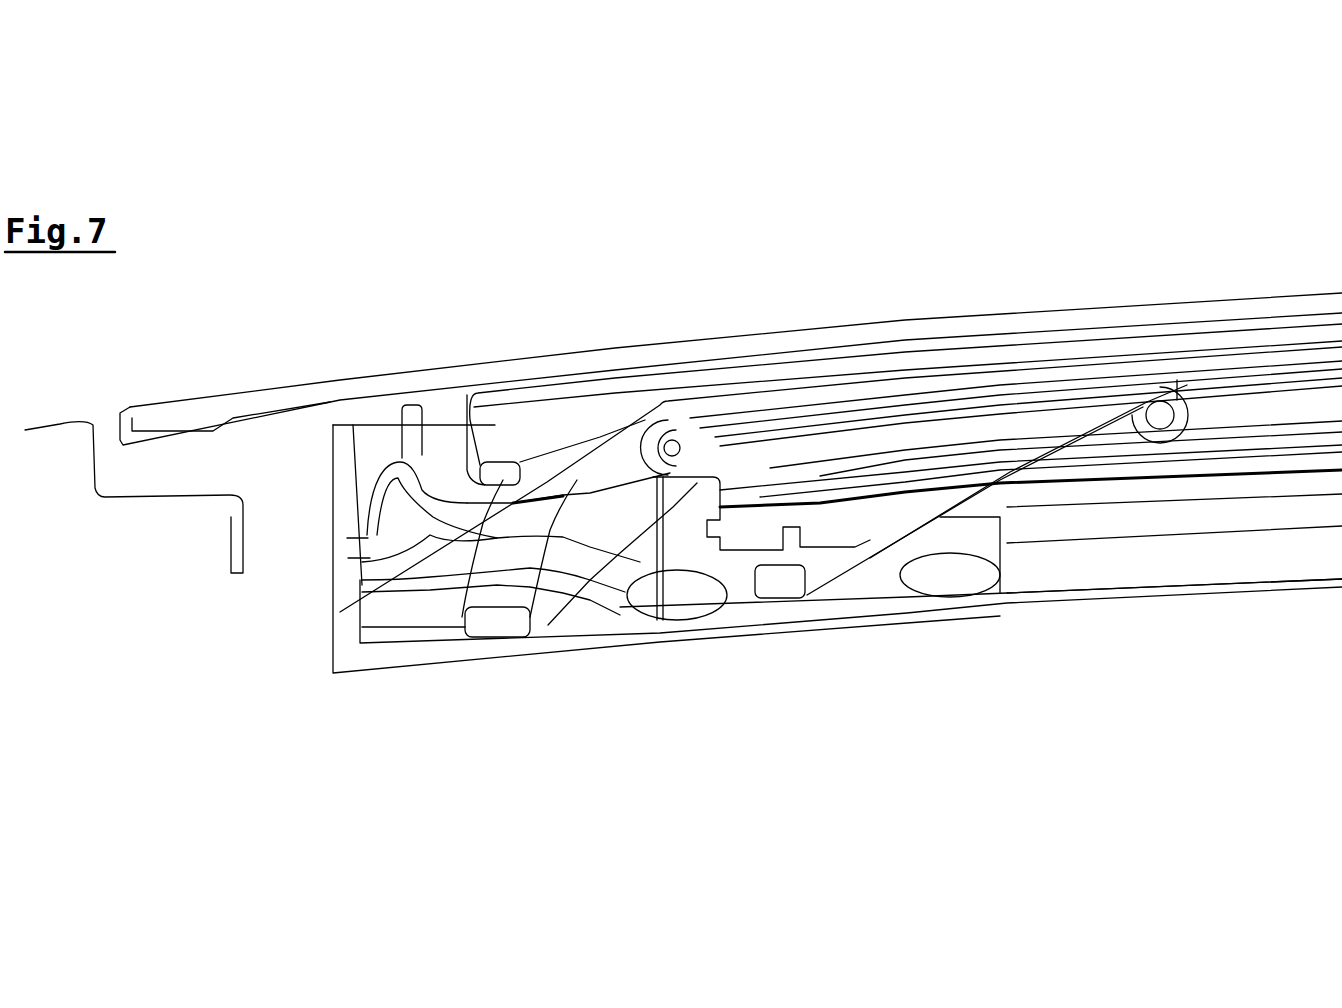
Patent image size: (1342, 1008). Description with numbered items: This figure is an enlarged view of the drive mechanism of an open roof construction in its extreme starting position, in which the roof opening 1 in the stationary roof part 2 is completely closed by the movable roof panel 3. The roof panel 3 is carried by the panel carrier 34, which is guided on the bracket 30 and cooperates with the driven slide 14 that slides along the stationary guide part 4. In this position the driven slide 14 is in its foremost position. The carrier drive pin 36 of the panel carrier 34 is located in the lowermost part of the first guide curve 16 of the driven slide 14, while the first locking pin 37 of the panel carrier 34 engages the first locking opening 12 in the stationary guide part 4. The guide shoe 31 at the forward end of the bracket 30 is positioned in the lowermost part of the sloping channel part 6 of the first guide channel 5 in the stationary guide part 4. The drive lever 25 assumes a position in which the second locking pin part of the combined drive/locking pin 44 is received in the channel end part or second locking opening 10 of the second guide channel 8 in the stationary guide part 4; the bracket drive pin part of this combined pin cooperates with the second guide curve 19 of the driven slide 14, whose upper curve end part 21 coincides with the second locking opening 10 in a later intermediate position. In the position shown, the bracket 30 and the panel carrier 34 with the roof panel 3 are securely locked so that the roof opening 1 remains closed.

The roof opening 1 is at (283, 450).
The stationary roof part 2 is at (58, 425).
The movable roof panel 3 is at (343, 392).
The stationary guide part 4 is at (405, 650).
The first guide channel 5 is at (620, 471).
The sloping channel part 6 is at (518, 592).
The second guide channel 8 is at (1204, 448).
The channel end part or second locking opening 10 is at (697, 455).
The first locking opening 12 is at (368, 589).
The driven slide 14 is at (917, 543).
The first guide curve 16 is at (618, 576).
The second guide curve 19 is at (387, 497).
The upper curve end part 21 is at (412, 470).
The drive lever 25 is at (1077, 497).
The bracket 30 is at (433, 620).
The guide shoe 31 is at (498, 630).
The panel carrier 34 is at (565, 420).
The carrier drive pin 36 is at (783, 585).
The first locking pin 37 is at (483, 472).
The combined drive/locking pin 44 is at (687, 450).